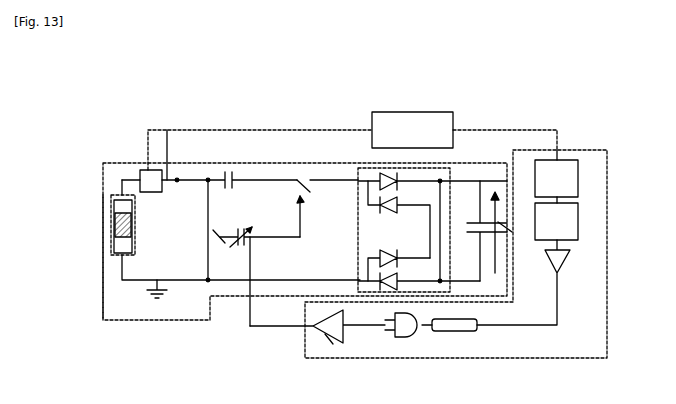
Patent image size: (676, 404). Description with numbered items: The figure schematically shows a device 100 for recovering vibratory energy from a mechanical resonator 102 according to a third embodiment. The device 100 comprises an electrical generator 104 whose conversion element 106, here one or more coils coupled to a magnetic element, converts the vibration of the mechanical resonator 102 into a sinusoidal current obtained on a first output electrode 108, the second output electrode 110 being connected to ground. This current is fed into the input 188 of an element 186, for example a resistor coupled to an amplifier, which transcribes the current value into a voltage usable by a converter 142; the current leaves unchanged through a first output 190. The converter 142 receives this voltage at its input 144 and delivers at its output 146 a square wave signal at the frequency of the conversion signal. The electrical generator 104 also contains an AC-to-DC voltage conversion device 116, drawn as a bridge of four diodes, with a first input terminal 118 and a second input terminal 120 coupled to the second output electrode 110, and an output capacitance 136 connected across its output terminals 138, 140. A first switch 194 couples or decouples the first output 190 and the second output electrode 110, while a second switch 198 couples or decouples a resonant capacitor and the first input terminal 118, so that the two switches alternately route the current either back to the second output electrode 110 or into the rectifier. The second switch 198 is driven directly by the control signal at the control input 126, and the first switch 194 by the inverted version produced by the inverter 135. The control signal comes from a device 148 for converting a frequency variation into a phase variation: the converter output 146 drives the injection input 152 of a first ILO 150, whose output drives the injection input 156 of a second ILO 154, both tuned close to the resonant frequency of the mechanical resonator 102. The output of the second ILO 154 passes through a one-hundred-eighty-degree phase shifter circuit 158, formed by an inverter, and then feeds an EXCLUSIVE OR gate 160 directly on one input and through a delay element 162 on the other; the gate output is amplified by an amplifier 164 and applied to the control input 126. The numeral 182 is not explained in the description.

The device for recovering vibratory energy 100 is at (98, 130).
The mechanical resonator 102 is at (78, 226).
The electrical generator 104 is at (103, 165).
The conversion element 106 is at (110, 218).
The first output electrode 108 is at (104, 193).
The second output electrode 110 is at (103, 252).
The AC-to-DC voltage conversion device 116 is at (358, 230).
The first input terminal 118 is at (335, 178).
The second input terminal 120 is at (332, 277).
The control input 126 is at (247, 297).
The inverter 135 is at (240, 230).
The output capacitance 136 is at (478, 222).
The output terminal 138 is at (478, 156).
The output terminal 140 is at (485, 245).
The converter 142 is at (415, 112).
The input 144 is at (372, 128).
The output 146 is at (453, 128).
The device for converting a frequency variation into a phase variation 148 is at (595, 150).
The first ILO 150 is at (583, 172).
The injection input 152 is at (560, 150).
The second ILO 154 is at (583, 228).
The injection input 156 is at (567, 200).
The 180° phase shifter circuit 158 is at (567, 262).
The EXCLUSIVE OR gate 160 is at (408, 338).
The delay element 162 is at (462, 332).
The amplifier 164 is at (330, 344).
The sense node 182 is at (138, 168).
The element for transcribing the current into a voltage 186 is at (148, 194).
The input 188 is at (135, 175).
The first output 190 is at (167, 166).
The first switch 194 is at (213, 230).
The second switch 198 is at (240, 174).